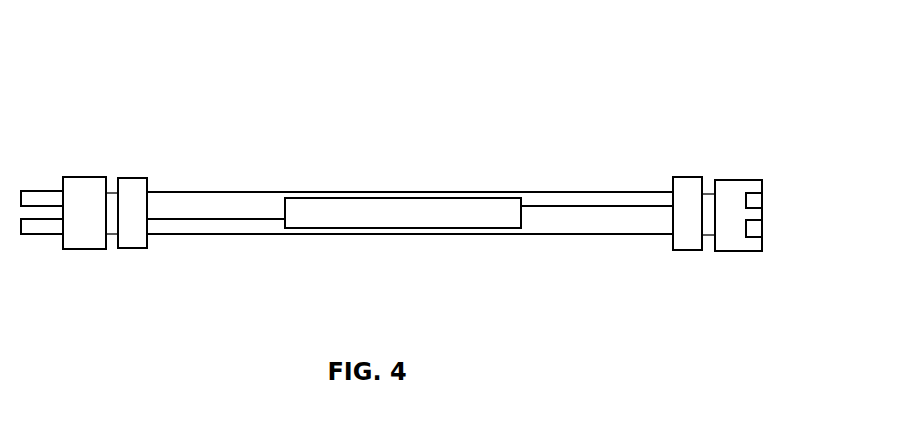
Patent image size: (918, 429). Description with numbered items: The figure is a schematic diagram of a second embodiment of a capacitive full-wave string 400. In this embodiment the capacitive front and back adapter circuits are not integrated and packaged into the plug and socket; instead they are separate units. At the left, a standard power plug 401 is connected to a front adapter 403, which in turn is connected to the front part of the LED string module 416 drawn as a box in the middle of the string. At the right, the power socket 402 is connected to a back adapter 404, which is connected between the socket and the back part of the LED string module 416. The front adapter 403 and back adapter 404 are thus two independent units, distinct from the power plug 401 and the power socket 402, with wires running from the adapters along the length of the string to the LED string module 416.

The capacitive full wave string 400 is at (452, 253).
The power plug 401 is at (86, 169).
The power socket 402 is at (752, 170).
The front adapter 403 is at (145, 169).
The back adapter 404 is at (690, 167).
The LED string module 416 is at (437, 197).